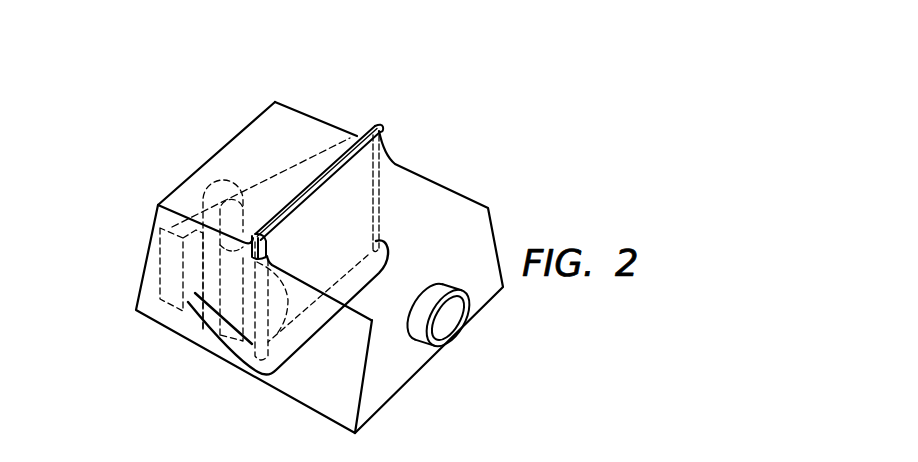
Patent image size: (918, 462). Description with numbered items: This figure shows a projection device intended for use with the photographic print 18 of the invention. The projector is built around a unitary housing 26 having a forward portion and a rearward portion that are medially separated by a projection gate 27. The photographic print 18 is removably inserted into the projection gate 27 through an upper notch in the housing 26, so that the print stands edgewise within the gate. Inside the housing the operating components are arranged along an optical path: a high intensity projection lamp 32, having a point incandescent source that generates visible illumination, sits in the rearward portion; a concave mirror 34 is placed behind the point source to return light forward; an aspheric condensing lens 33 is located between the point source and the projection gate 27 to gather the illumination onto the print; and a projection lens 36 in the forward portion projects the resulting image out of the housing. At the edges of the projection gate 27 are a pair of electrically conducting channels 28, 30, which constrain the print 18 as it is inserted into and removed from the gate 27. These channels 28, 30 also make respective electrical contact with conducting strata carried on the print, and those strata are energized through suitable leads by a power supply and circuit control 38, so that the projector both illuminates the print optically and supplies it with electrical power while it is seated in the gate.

The photographic print 18 is at (351, 128).
The unitary housing 26 is at (428, 188).
The projection gate 27 is at (341, 163).
The electrically conducting channel 28 is at (295, 282).
The electrically conducting channel 30 is at (383, 183).
The high intensity projection lamp 32 is at (248, 200).
The aspheric condensing lens 33 is at (323, 155).
The concave mirror 34 is at (205, 184).
The projection lens 36 is at (455, 330).
The power supply and circuit control 38 is at (154, 318).